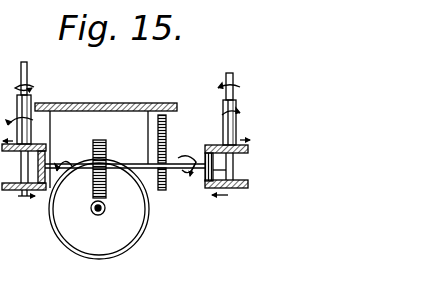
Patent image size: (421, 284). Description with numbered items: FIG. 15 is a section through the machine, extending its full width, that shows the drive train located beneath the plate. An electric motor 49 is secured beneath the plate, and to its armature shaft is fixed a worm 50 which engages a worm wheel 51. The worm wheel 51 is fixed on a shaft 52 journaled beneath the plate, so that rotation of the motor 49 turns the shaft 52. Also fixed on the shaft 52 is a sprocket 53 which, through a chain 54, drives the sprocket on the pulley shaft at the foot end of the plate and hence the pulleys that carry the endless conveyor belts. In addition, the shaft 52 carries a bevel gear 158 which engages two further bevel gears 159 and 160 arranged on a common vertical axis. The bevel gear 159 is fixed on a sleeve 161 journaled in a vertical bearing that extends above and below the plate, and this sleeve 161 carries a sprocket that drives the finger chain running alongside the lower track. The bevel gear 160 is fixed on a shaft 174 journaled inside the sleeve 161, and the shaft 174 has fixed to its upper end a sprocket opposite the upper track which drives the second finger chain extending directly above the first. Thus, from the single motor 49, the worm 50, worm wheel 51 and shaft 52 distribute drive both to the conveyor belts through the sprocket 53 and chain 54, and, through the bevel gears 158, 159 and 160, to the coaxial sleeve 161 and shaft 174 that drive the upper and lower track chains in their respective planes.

The electric motor 49 is at (62, 217).
The worm 50 is at (105, 209).
The worm wheel 51 is at (100, 138).
The shaft 52 is at (125, 157).
The sprocket 53 is at (162, 190).
The chain 54 is at (166, 118).
The bevel gear 158 is at (246, 183).
The bevel gear 159 is at (247, 150).
The bevel gear 160 is at (247, 188).
The sleeve 161 is at (236, 122).
The shaft 174 is at (233, 172).